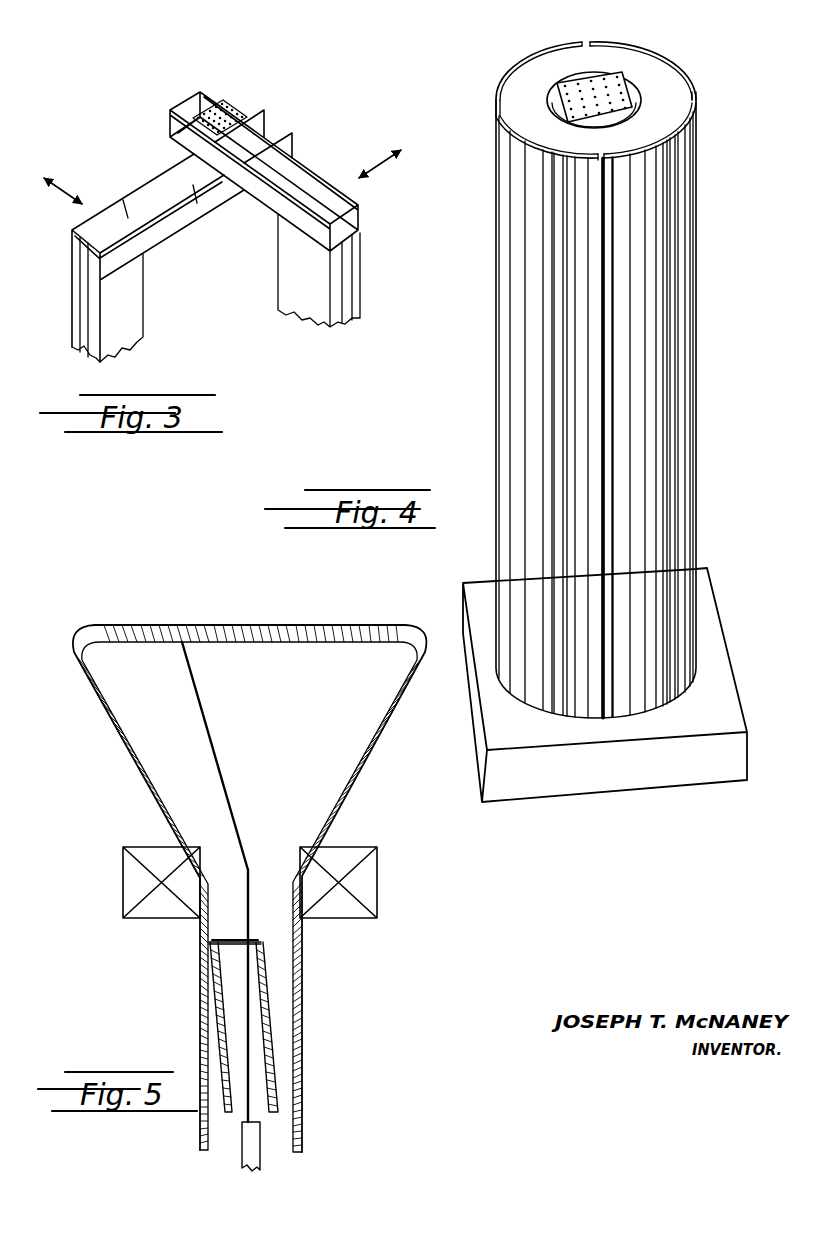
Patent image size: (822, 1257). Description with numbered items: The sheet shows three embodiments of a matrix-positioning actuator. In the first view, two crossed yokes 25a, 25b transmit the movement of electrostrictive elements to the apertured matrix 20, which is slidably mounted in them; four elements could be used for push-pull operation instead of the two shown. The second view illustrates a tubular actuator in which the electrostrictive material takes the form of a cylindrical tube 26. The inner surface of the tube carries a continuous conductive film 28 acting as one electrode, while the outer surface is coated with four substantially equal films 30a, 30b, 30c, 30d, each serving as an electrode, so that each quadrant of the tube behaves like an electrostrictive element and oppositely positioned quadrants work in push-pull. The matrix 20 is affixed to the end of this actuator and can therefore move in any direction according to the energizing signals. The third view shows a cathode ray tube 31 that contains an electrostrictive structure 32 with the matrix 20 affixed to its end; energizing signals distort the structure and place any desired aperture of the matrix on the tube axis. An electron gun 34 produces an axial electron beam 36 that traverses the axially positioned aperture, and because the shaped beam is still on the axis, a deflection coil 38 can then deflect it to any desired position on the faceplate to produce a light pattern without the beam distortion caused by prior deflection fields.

In FIG. 3, the matrix 20 is at (172, 109).
In FIG. 4, the matrix 20 is at (622, 72).
In FIG. 5, the matrix 20 is at (233, 942).
In FIG. 3, the yoke 25a is at (165, 170).
In FIG. 3, the yoke 25b is at (303, 157).
In FIG. 4, the cylindrical tube 26 is at (492, 313).
In FIG. 4, the continuous conductive film 28 is at (548, 90).
In FIG. 4, the film 30a is at (548, 48).
In FIG. 4, the film 30b is at (692, 124).
In FIG. 4, the film 30c is at (680, 62).
In FIG. 4, the film 30d is at (508, 150).
In FIG. 5, the cathode ray tube 31 is at (98, 713).
In FIG. 5, the electrostrictive structure 32 is at (264, 956).
In FIG. 5, the electron gun 34 is at (243, 1168).
In FIG. 5, the electron beam 36 is at (260, 1124).
In FIG. 5, the deflection coil 38 is at (123, 870).